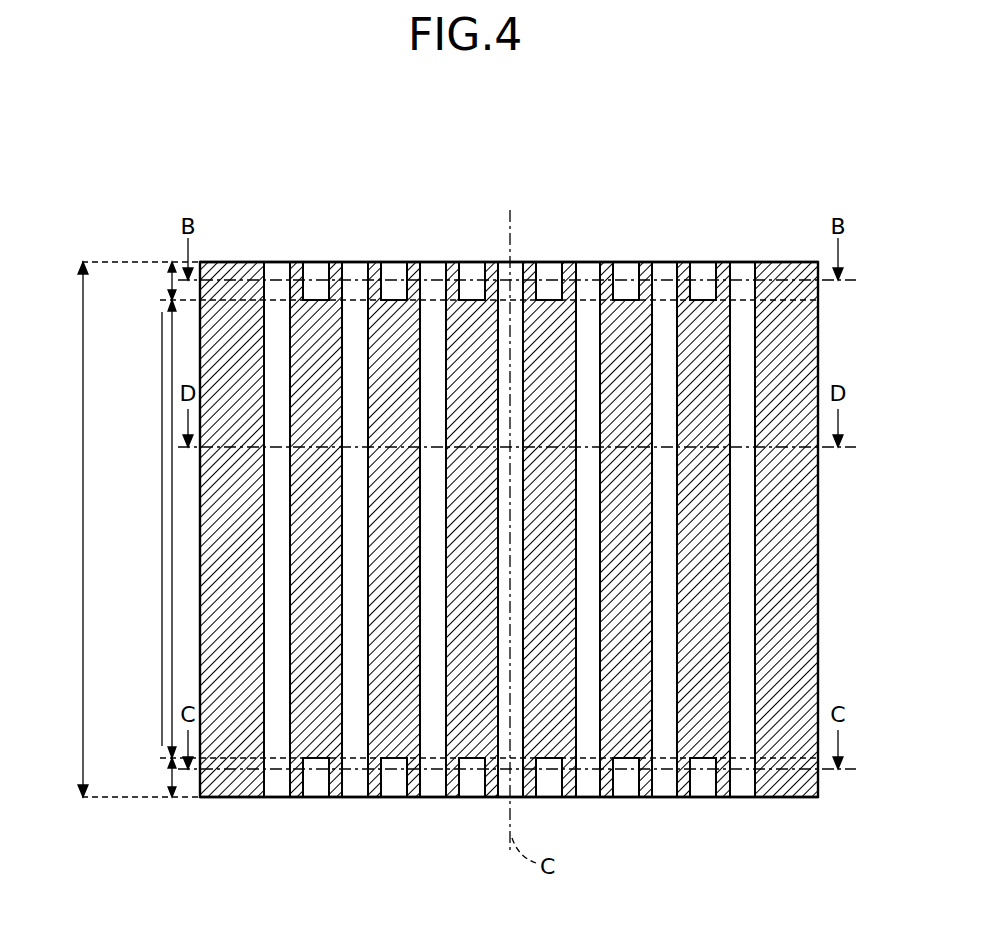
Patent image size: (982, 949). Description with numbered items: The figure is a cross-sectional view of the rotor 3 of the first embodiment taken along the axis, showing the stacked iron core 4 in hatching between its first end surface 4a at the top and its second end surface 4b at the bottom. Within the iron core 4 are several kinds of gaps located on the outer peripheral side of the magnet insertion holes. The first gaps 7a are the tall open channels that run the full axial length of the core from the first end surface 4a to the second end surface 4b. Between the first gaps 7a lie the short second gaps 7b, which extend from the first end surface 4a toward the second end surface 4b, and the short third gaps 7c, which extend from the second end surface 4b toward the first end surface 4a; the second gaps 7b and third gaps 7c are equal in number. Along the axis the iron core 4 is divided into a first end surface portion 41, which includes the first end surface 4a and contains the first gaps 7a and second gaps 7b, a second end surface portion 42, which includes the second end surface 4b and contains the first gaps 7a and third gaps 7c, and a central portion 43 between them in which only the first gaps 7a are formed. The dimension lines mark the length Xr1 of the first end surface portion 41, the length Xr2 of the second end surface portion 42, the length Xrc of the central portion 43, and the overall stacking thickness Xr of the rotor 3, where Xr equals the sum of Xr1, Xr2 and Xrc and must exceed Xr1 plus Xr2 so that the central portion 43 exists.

The rotor 3 is at (478, 163).
The iron core 4 is at (818, 313).
The first end surface 4a is at (742, 262).
The second end surface 4b is at (786, 797).
The first gaps 7a is at (594, 578).
The second gaps 7b is at (698, 283).
The third gaps 7c is at (713, 778).
The first end surface portion 41 is at (156, 262).
The second end surface portion 42 is at (156, 758).
The central portion 43 is at (167, 300).
The stacking thickness of the iron core Xr is at (83, 448).
The length of the first end surface portion Xr1 is at (171, 282).
The length of the second end surface portion Xr2 is at (162, 797).
The length of the central portion Xrc is at (170, 402).